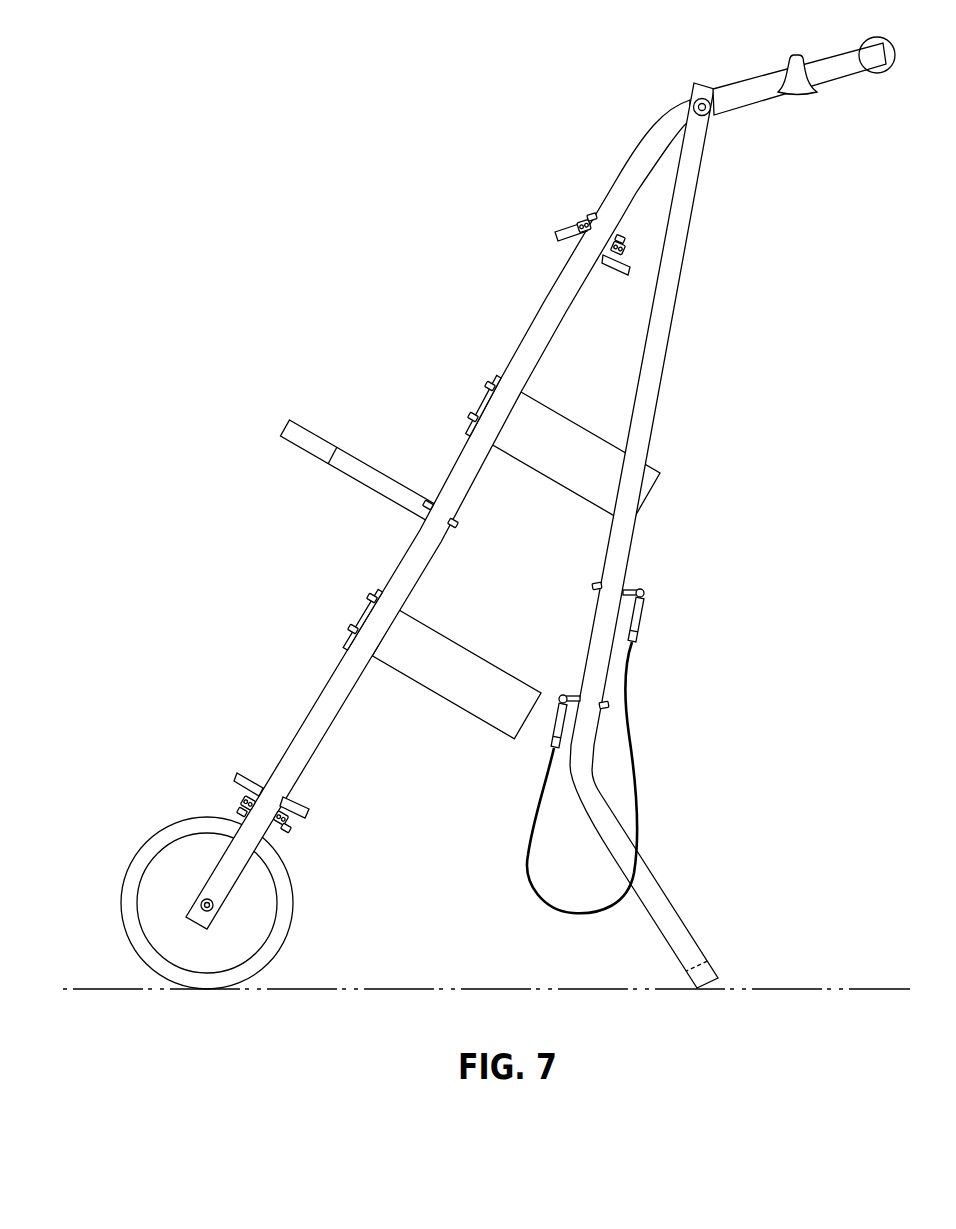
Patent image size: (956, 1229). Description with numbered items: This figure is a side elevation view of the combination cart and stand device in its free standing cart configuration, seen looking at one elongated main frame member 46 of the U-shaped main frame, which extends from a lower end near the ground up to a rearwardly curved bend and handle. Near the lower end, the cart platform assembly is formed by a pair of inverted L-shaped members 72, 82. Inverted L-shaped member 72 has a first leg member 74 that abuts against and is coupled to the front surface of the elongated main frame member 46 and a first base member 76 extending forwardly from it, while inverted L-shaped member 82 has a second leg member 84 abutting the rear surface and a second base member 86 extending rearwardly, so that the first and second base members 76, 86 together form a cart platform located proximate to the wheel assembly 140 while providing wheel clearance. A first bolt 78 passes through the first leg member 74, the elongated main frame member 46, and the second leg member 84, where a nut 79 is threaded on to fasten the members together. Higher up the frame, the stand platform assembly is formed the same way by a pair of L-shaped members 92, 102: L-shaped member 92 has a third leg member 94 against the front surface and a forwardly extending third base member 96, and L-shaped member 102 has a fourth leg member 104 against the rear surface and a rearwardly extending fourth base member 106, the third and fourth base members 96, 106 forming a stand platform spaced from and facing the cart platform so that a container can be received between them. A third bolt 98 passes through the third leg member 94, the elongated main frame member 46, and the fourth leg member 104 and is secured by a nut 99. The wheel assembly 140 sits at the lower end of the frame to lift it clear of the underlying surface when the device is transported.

The elongated main frame member 46 is at (394, 572).
The inverted L-shaped member 72 is at (205, 748).
The first leg member 74 is at (240, 811).
The first base member 76 is at (236, 775).
The first bolt 78 is at (243, 797).
The nut 79 is at (286, 826).
The inverted L-shaped member 82 is at (340, 833).
The second leg member 84 is at (288, 836).
The second base member 86 is at (309, 816).
The L-shaped member 92 is at (515, 218).
The third leg member 94 is at (593, 214).
The third base member 96 is at (560, 234).
The third bolt 98 is at (583, 222).
The nut 99 is at (622, 250).
The L-shaped member 102 is at (672, 294).
The fourth leg member 104 is at (623, 241).
The fourth base member 106 is at (634, 274).
The wheel assembly 140 is at (137, 830).